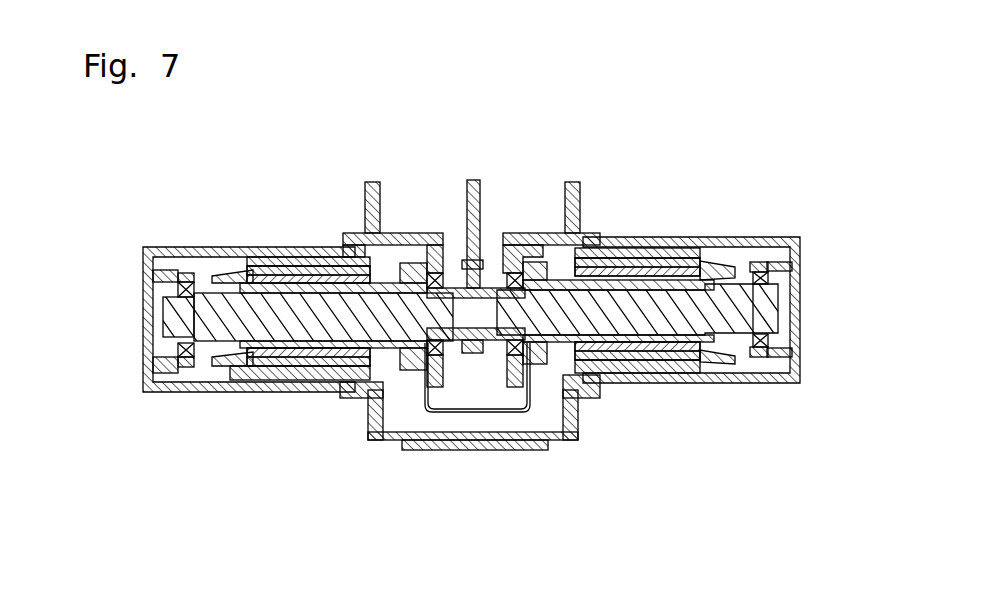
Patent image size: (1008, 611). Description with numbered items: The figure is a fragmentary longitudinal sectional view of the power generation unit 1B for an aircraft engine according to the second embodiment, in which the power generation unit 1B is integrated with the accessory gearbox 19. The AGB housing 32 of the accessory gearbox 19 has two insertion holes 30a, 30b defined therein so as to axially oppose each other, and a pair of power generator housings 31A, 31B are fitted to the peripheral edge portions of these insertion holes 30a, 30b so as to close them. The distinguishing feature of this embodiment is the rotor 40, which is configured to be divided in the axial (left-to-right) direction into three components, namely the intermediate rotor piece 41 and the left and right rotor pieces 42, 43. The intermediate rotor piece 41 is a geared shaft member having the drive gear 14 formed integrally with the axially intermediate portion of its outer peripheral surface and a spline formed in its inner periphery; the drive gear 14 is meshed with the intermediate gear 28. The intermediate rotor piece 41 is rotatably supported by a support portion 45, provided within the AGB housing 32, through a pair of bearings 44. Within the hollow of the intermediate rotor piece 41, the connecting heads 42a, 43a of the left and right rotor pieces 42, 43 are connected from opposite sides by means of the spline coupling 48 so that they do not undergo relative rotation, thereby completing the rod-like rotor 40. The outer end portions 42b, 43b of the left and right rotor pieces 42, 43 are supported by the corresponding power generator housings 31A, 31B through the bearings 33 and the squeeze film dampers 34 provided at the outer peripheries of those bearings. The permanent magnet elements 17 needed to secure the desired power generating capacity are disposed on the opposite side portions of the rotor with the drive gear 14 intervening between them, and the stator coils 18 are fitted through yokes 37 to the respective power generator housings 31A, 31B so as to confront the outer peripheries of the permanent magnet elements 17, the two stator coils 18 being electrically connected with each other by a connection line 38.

The power generation unit 1B is at (734, 230).
The drive gear 14 is at (478, 375).
The permanent magnet elements 17 is at (310, 365).
The stator coils 18 is at (275, 278).
The accessory gearbox 19 is at (352, 210).
The intermediate gear 28 is at (467, 203).
The insertion hole 30a is at (355, 232).
The insertion hole 30b is at (583, 240).
The power generator housing 31A is at (207, 250).
The power generator housing 31B is at (766, 237).
The AGB housing 32 is at (375, 185).
The bearings 33 is at (150, 286).
The squeeze film dampers 34 is at (187, 367).
The yokes 37 is at (275, 372).
The connection line 38 is at (467, 414).
The rotor 40 is at (565, 121).
The intermediate rotor piece 41 is at (492, 285).
The left rotor piece 42 is at (343, 317).
The connecting head 42a is at (465, 372).
The outer end portion 42b is at (180, 322).
The right rotor piece 43 is at (633, 310).
The connecting head 43a is at (503, 372).
The outer end portion 43b is at (763, 311).
The bearings 44 is at (518, 282).
The support portion 45 is at (395, 410).
The spline coupling 48 is at (365, 395).